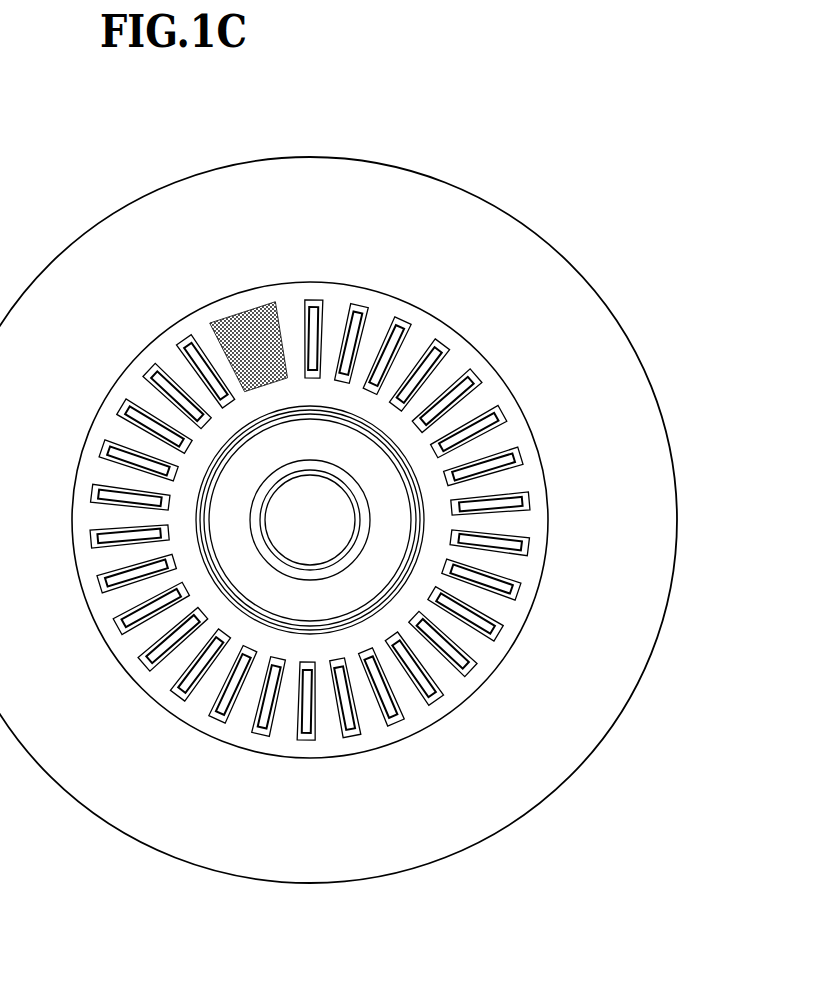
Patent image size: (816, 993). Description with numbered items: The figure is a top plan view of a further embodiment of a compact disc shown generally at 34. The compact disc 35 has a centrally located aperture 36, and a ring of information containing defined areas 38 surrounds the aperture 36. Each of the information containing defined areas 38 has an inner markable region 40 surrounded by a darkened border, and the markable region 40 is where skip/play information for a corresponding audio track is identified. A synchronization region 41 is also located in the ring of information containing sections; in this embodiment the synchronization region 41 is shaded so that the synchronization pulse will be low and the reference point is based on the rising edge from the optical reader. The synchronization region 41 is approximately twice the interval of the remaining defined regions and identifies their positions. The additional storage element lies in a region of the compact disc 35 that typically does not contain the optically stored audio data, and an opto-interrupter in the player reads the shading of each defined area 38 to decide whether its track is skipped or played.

The further embodiment 34 is at (77, 881).
The compact disc 35 is at (598, 713).
The centrally located aperture 36 is at (326, 505).
The information containing defined areas 38 is at (503, 411).
The inner markable regions 40 is at (404, 321).
The synchronization region 41 is at (244, 327).